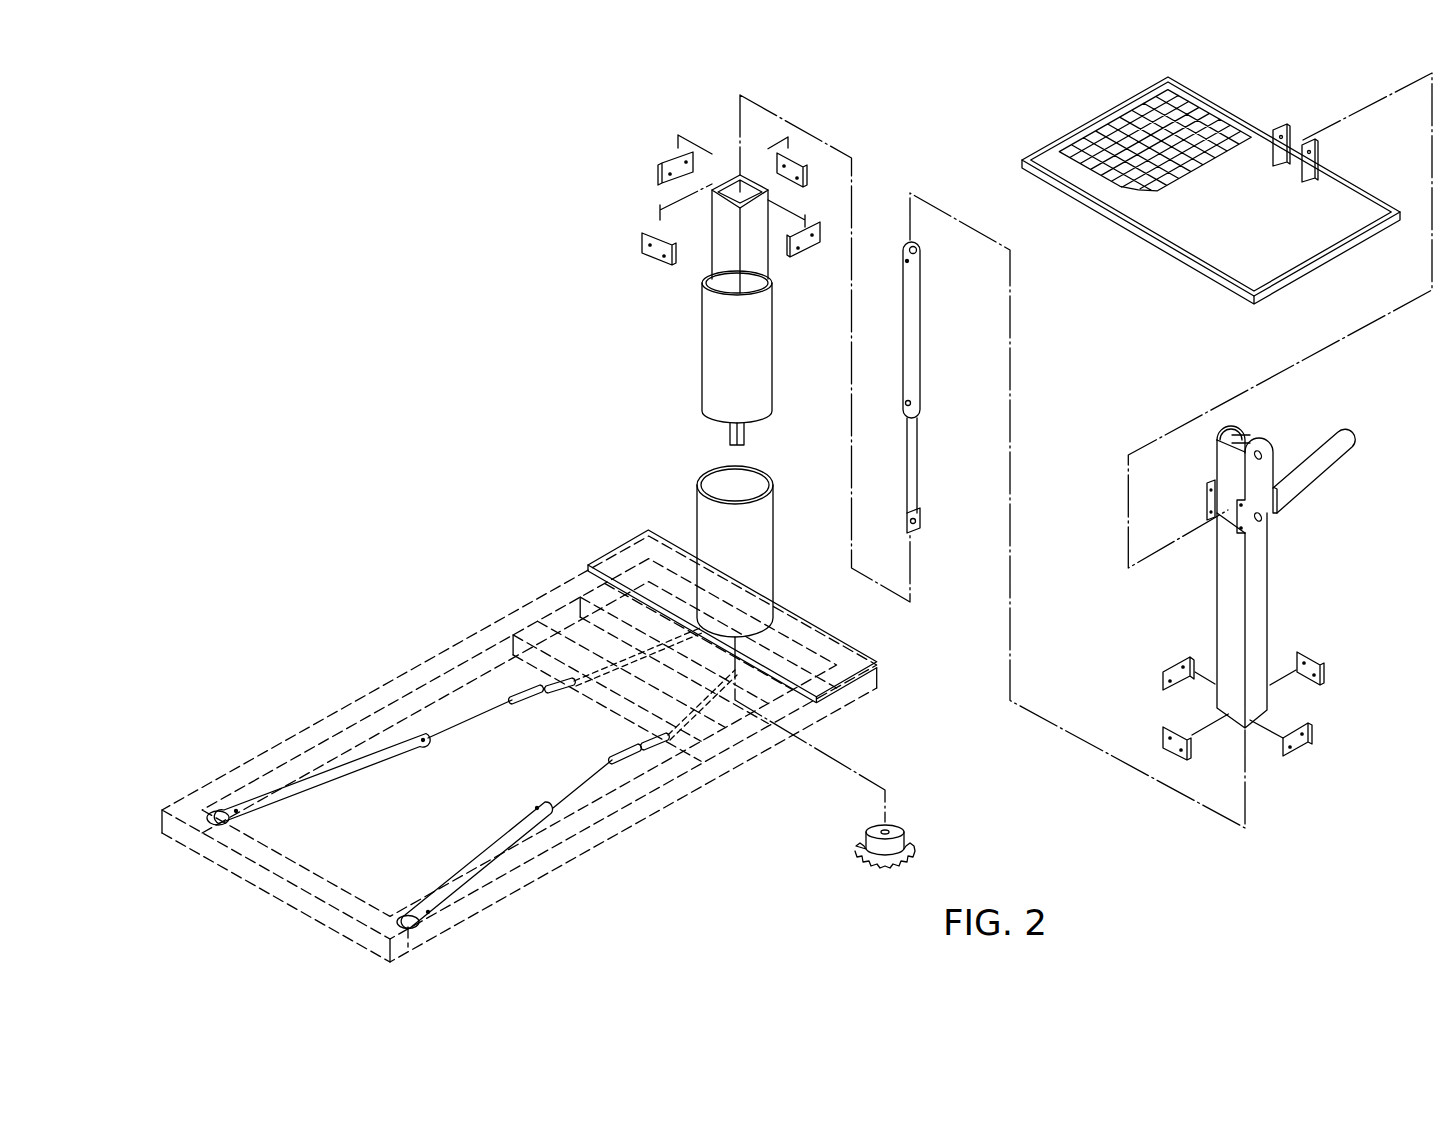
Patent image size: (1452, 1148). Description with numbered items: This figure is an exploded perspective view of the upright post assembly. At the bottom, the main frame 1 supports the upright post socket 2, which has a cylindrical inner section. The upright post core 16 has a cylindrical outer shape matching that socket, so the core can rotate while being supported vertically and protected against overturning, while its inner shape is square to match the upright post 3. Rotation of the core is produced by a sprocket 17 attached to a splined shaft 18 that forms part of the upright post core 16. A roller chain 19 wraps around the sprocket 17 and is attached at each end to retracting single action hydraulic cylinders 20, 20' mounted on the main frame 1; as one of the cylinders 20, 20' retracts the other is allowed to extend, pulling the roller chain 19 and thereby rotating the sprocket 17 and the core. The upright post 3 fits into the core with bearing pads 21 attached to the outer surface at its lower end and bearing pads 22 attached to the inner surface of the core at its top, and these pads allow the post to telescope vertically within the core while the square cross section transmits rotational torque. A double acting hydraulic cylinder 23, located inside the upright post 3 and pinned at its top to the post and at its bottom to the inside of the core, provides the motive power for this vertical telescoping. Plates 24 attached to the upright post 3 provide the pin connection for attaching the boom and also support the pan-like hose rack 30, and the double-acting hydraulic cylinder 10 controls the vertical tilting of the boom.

The main frame 1 is at (622, 833).
The upright post socket 2 is at (697, 512).
The upright post 3 is at (1270, 614).
The double-acting hydraulic cylinder 10 is at (1328, 464).
The upright post core 16 is at (702, 350).
The sprocket 17 is at (908, 845).
The splined shaft 18 is at (746, 436).
The roller chain 19 is at (632, 748).
The retracting single action hydraulic cylinder 20 is at (318, 780).
The retracting single action hydraulic cylinder 20' is at (474, 865).
The bearing pads 21 is at (1312, 746).
The bearing pads 22 is at (660, 172).
The double acting hydraulic cylinder 23 is at (922, 316).
The plates 24 is at (1282, 431).
The hose rack 30 is at (1085, 128).